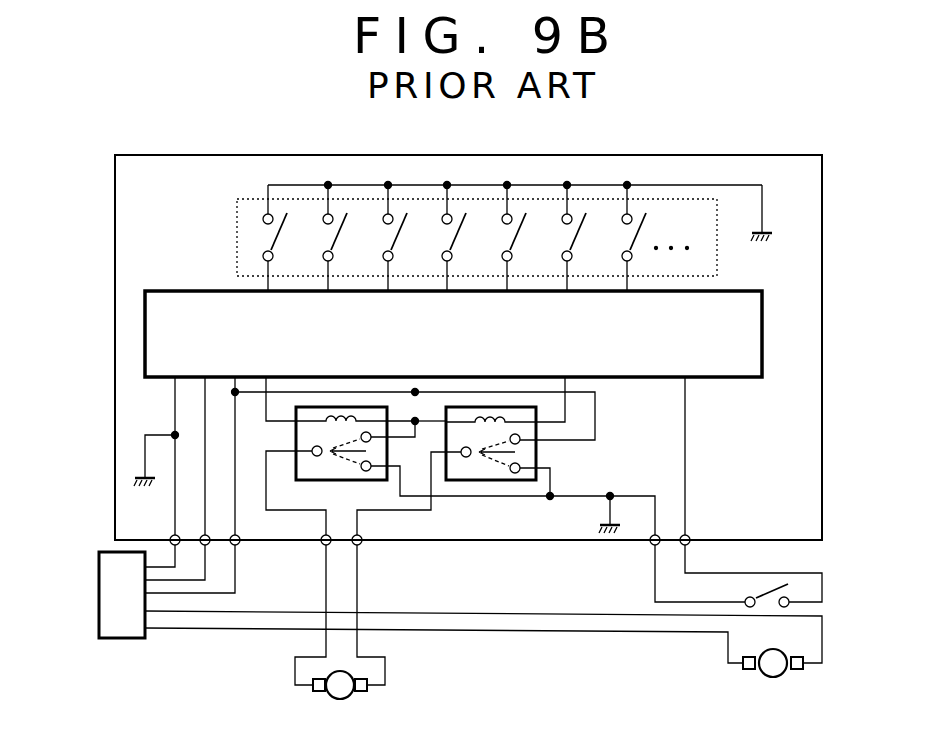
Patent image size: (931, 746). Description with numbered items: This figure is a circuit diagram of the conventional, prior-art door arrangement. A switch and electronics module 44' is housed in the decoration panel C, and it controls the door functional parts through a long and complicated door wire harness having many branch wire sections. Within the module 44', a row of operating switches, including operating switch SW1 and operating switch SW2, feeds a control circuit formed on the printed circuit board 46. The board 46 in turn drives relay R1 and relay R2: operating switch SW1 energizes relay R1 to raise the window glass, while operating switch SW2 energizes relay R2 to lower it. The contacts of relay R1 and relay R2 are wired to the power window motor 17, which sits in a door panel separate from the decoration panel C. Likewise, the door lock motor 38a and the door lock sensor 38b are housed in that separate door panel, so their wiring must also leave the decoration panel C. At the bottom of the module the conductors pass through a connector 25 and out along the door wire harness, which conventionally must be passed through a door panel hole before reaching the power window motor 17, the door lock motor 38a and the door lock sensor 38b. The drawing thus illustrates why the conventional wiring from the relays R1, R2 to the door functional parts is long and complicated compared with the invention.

The decoration panel C is at (795, 158).
The switch and electronics module 44' is at (520, 242).
The operating switch SW1 is at (263, 239).
The operating switch SW2 is at (322, 239).
The printed circuit board 46 is at (453, 334).
The relay R1 is at (370, 482).
The relay R2 is at (490, 482).
The connector 25 is at (128, 641).
The power window motor 17 is at (354, 698).
The door lock sensor 38b is at (775, 588).
The door lock motor 38a is at (772, 680).